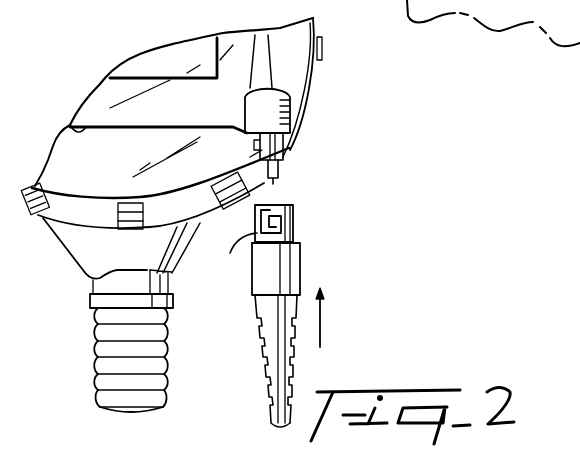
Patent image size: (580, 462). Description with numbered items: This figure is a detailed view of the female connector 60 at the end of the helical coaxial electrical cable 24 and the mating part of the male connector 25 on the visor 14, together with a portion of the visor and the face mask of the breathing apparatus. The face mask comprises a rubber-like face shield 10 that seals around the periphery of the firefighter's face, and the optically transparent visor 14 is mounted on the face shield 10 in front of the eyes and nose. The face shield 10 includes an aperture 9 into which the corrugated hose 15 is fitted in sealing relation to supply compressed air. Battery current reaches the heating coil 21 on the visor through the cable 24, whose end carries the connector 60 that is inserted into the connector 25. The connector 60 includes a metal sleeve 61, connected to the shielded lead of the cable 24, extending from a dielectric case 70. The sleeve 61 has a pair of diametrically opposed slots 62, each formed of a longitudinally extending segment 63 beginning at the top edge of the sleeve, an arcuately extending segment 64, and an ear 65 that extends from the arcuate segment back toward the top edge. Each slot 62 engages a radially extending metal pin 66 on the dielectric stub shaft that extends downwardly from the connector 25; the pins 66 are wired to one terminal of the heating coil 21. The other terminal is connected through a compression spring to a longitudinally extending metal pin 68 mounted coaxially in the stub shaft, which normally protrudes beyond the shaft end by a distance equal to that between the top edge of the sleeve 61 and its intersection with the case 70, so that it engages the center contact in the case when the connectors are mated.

The aperture 9 is at (97, 304).
The face shield 10 is at (71, 248).
The visor 14 is at (33, 186).
The hose 15 is at (106, 357).
The heating coil 21 is at (70, 124).
The helical coaxial electrical cable 24 is at (268, 401).
The connector 25 is at (290, 114).
The connector 60 is at (311, 256).
The metal sleeve 61 is at (236, 257).
The slot 62 is at (303, 231).
The longitudinally extending segment 63 is at (285, 223).
The arcuately extending segment 64 is at (298, 250).
The ear 65 is at (275, 206).
The metal pin 66 is at (287, 144).
The longitudinally extending metal pin 68 is at (281, 177).
The dielectric case 70 is at (262, 272).